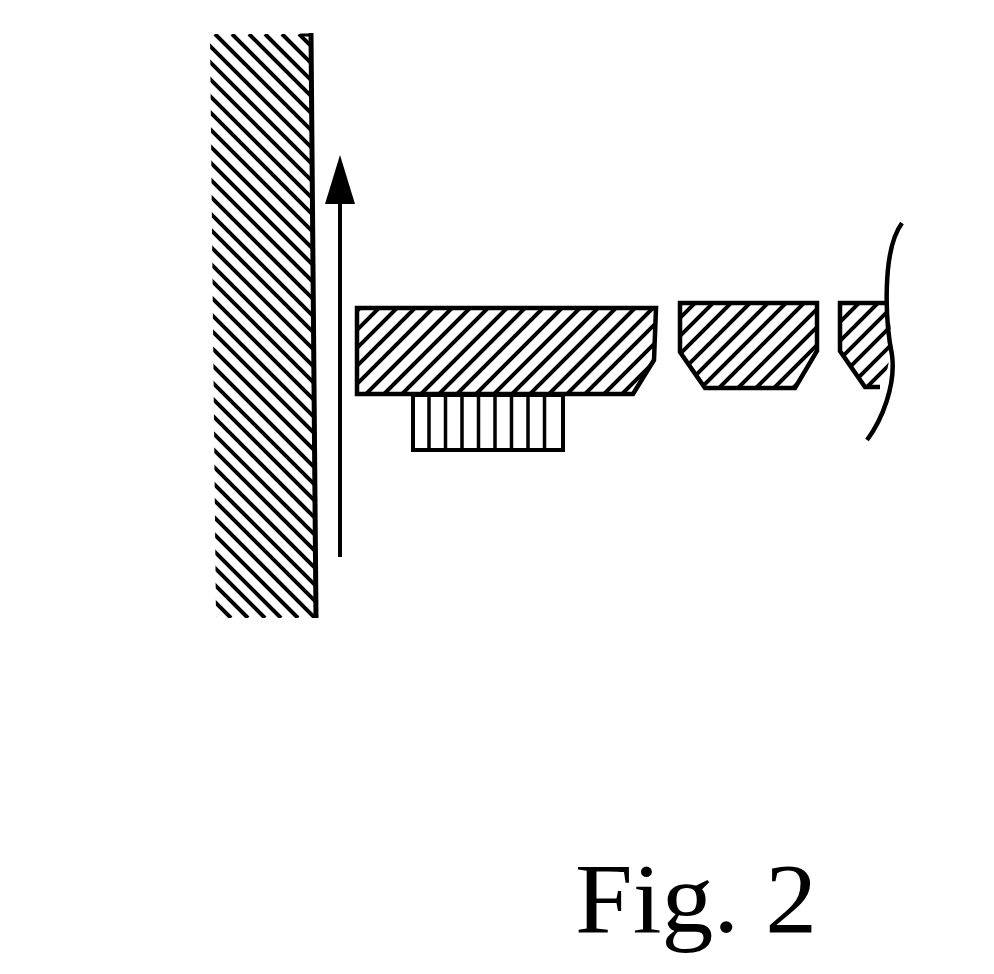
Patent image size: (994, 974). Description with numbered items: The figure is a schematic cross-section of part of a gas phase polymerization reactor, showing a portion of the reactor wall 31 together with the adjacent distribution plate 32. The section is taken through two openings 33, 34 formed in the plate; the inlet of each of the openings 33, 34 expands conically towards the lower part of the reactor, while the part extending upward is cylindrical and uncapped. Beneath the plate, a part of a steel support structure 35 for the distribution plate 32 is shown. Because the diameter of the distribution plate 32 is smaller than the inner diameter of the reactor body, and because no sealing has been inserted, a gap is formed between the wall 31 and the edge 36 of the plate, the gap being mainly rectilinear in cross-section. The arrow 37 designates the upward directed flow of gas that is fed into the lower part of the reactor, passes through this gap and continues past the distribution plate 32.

The wall 31 is at (253, 493).
The distribution plate 32 is at (535, 250).
The opening 33 is at (669, 322).
The opening 34 is at (828, 316).
The steel support structure 35 is at (566, 435).
The edge 36 is at (355, 333).
The upward directed flow of gas 37 is at (341, 491).